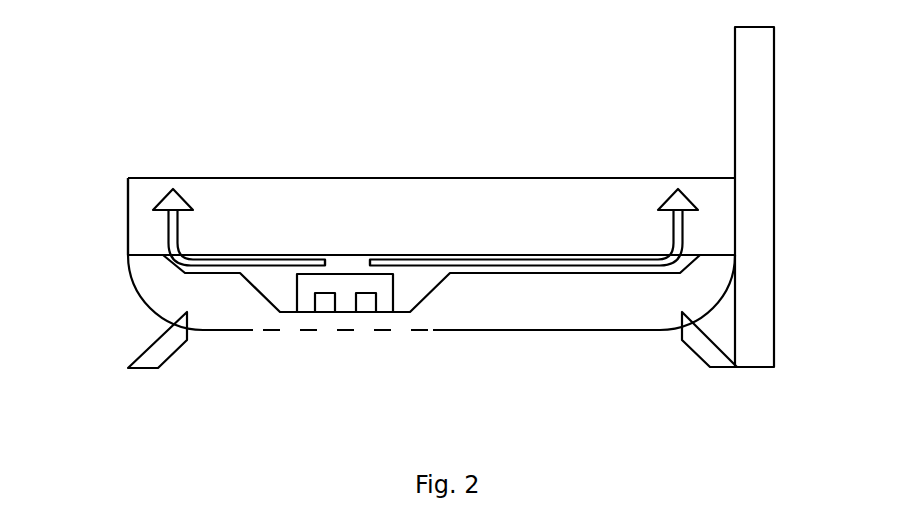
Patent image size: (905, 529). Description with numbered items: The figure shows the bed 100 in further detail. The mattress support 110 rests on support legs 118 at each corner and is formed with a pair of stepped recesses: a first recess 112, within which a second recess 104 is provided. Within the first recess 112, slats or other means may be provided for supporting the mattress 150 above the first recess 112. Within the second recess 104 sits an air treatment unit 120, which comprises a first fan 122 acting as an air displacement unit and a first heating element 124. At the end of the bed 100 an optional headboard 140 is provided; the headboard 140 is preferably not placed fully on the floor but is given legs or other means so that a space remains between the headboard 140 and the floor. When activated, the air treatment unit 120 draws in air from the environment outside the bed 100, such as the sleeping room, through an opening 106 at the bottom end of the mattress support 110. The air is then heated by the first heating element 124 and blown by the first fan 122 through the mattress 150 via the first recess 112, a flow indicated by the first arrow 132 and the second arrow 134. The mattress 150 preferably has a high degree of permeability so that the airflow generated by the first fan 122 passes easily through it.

The bed 100 is at (87, 22).
The second recess 104 is at (413, 292).
The opening 106 is at (410, 332).
The mattress support 110 is at (152, 278).
The first recess 112 is at (342, 260).
The support legs 118 is at (130, 368).
The air treatment unit 120 is at (293, 313).
The first fan 122 is at (322, 304).
The first heating element 124 is at (368, 303).
The first arrow 132 is at (173, 178).
The second arrow 134 is at (655, 178).
The headboard 140 is at (735, 115).
The mattress 150 is at (128, 180).